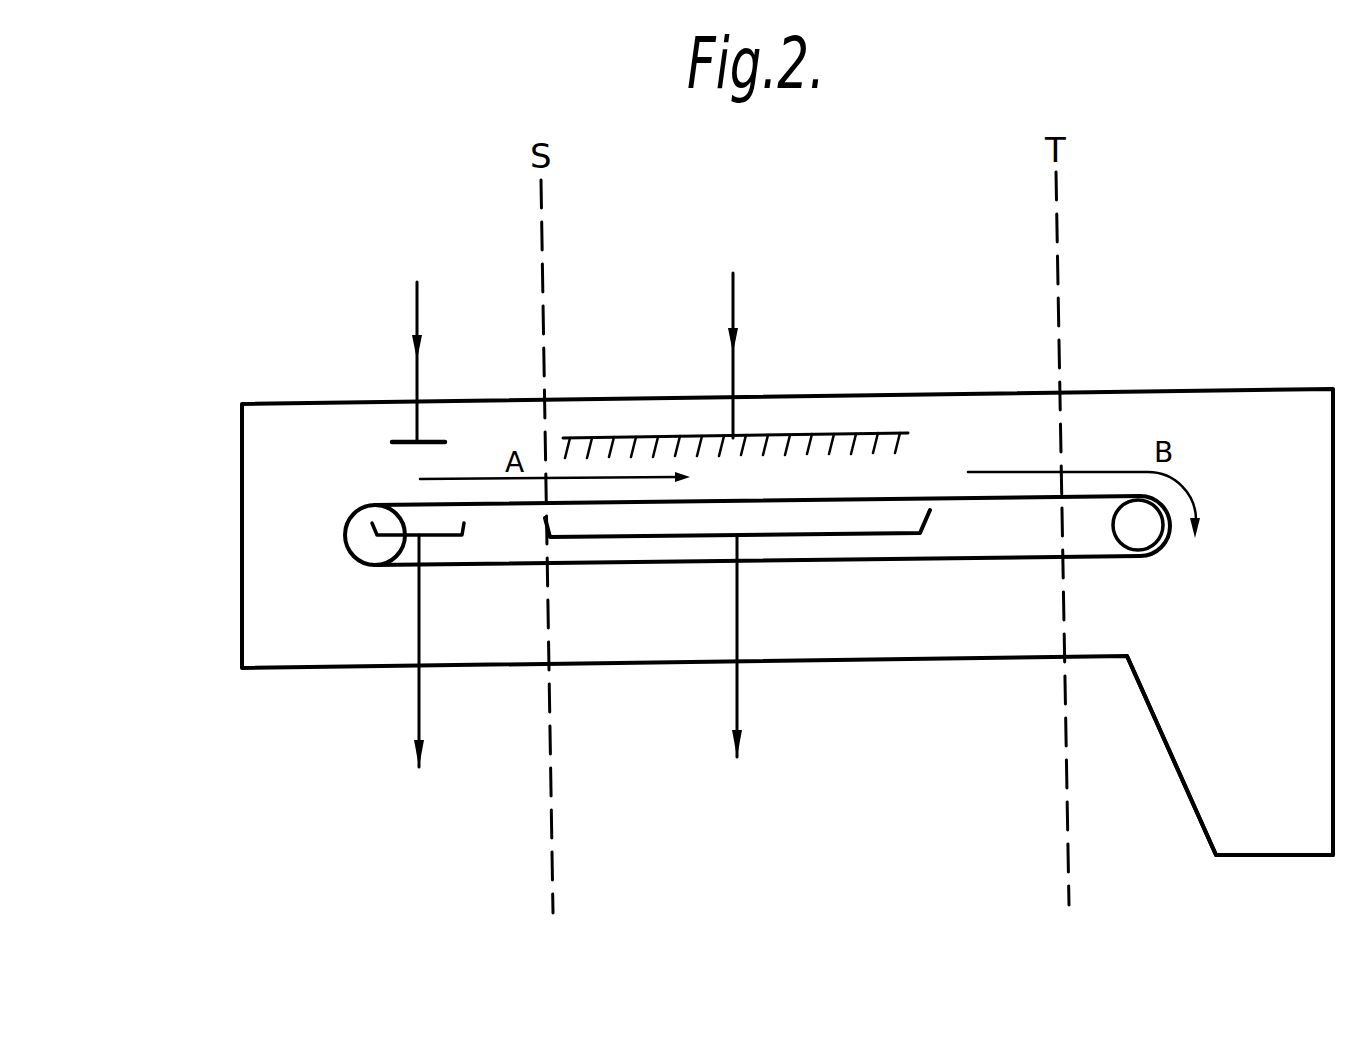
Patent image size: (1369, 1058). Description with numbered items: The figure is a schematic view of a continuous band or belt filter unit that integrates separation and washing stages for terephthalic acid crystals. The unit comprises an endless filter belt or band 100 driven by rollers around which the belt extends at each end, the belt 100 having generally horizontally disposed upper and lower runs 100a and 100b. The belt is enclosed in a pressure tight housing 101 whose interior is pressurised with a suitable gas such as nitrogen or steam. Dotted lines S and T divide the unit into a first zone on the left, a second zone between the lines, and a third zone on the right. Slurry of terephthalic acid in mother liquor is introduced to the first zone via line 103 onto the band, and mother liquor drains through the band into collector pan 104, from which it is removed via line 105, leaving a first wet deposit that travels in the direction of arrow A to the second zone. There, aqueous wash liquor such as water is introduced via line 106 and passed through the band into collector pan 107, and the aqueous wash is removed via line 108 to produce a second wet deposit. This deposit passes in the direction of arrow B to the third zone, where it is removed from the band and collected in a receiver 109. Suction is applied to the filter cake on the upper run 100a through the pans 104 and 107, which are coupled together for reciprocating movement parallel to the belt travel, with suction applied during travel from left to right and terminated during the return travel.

The endless filter belt 100 is at (772, 533).
The upper run 100a is at (933, 494).
The lower run 100b is at (1005, 560).
The pressure tight housing 101 is at (242, 450).
The slurry inlet line 103 is at (418, 300).
The collector pan 104 is at (372, 538).
The mother liquor removal line 105 is at (419, 714).
The wash liquor line 106 is at (735, 297).
The collector pan 107 is at (845, 537).
The aqueous wash removal line 108 is at (737, 700).
The receiver 109 is at (1179, 780).